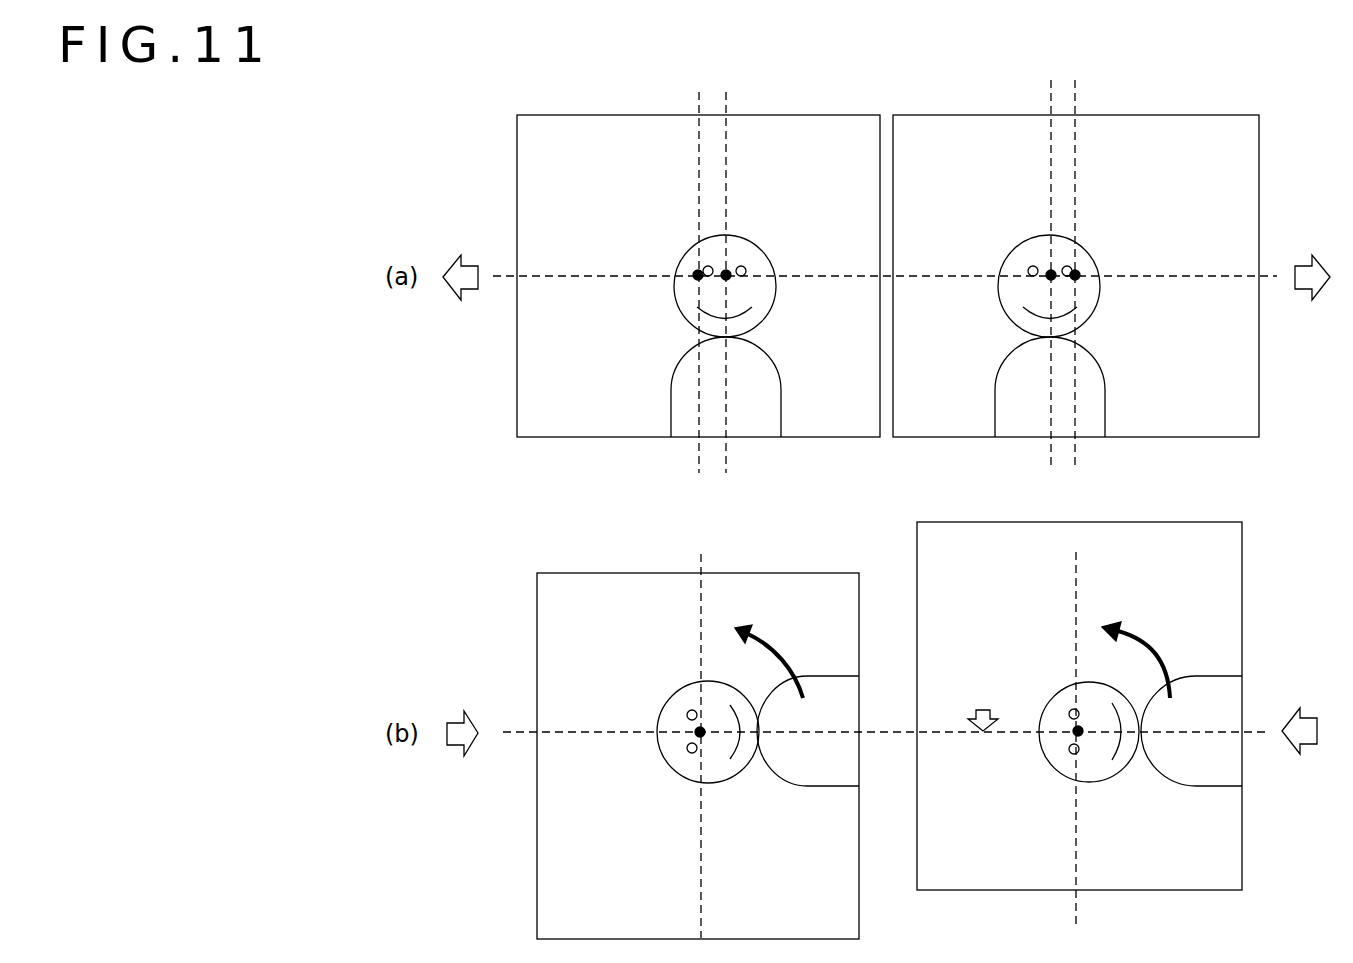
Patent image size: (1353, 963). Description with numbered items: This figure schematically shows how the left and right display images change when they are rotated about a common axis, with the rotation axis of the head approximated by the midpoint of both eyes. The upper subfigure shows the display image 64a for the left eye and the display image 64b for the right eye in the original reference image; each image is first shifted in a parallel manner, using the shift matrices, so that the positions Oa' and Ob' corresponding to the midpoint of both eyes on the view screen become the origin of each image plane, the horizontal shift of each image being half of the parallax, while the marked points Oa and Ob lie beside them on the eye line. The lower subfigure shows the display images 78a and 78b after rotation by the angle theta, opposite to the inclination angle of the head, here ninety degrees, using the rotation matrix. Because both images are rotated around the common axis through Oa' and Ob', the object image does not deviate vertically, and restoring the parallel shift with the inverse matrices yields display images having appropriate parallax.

The display image for the left eye 64a is at (517, 170).
The display image for the right eye 64b is at (1262, 148).
The display image 78a is at (537, 612).
The display image 78b is at (1244, 568).
The first image center Oa is at (668, 248).
The position corresponding to the midpoint of both eyes Oa' is at (747, 472).
The second image center Ob is at (1112, 256).
The position corresponding to the midpoint of both eyes Ob' is at (1032, 468).